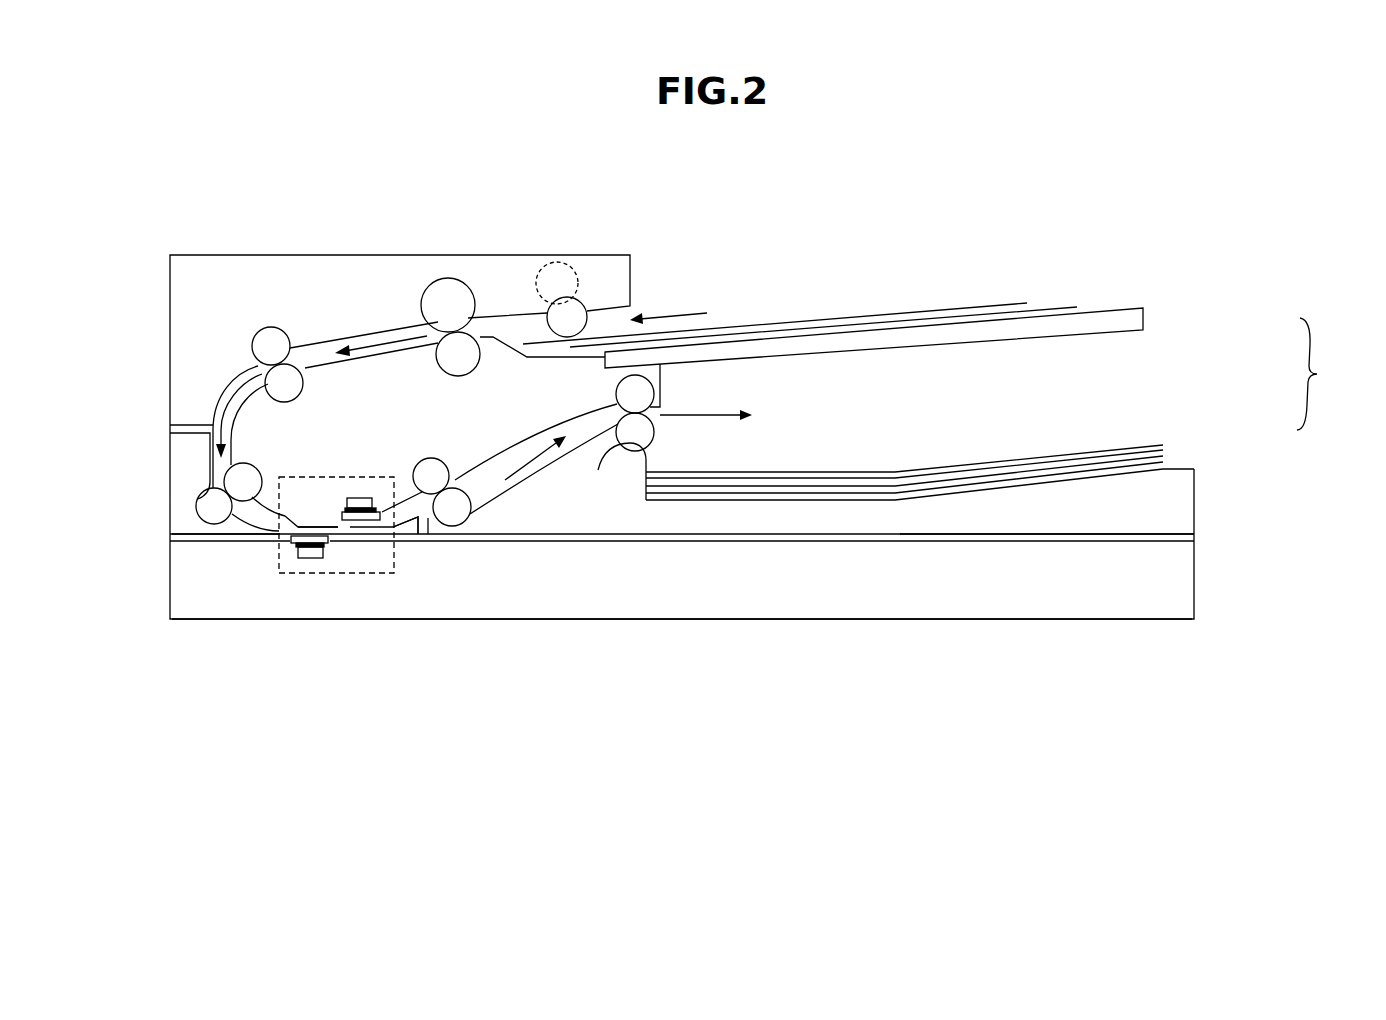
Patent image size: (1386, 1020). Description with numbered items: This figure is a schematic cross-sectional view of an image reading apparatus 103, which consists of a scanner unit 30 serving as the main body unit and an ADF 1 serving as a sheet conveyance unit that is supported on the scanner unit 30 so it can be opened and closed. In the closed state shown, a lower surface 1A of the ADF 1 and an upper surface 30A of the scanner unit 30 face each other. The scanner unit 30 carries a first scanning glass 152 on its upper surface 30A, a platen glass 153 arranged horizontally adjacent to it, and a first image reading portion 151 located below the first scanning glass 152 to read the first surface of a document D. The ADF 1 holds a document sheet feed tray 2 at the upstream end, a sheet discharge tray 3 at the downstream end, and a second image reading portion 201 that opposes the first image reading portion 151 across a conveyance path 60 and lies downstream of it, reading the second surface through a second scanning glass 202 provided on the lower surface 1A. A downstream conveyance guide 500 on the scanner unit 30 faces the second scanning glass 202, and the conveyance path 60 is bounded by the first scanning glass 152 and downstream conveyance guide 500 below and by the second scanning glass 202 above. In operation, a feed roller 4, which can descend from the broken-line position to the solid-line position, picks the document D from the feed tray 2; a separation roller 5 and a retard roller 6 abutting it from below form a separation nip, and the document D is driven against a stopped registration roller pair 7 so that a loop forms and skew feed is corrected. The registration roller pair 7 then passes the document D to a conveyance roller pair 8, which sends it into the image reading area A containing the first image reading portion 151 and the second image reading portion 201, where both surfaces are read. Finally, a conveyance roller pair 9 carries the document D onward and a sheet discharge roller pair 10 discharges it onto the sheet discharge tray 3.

The ADF 1 is at (1168, 380).
The lower surface of the ADF 1A is at (548, 541).
The document sheet feed tray 2 is at (1045, 341).
The sheet discharge tray 3 is at (1177, 480).
The feed roller 4 is at (548, 310).
The separation roller 5 is at (449, 278).
The retard roller 6 is at (478, 365).
The registration roller pair 7 is at (283, 328).
The conveyance roller pair 8 is at (197, 498).
The conveyance roller pair 9 is at (438, 456).
The sheet discharge roller pair 10 is at (620, 438).
The scanner unit 30 is at (1208, 546).
The upper surface of the scanner unit 30A is at (225, 519).
The conveyance path 60 is at (362, 530).
The image reading apparatus 103 is at (1329, 374).
The first image reading portion 151 is at (325, 558).
The first scanning glass 152 is at (293, 550).
The platen glass 153 is at (1157, 532).
The second image reading portion 201 is at (352, 497).
The second scanning glass 202 is at (378, 510).
The downstream conveyance guide 500 is at (412, 527).
The image reading area A is at (266, 567).
The document D is at (855, 317).